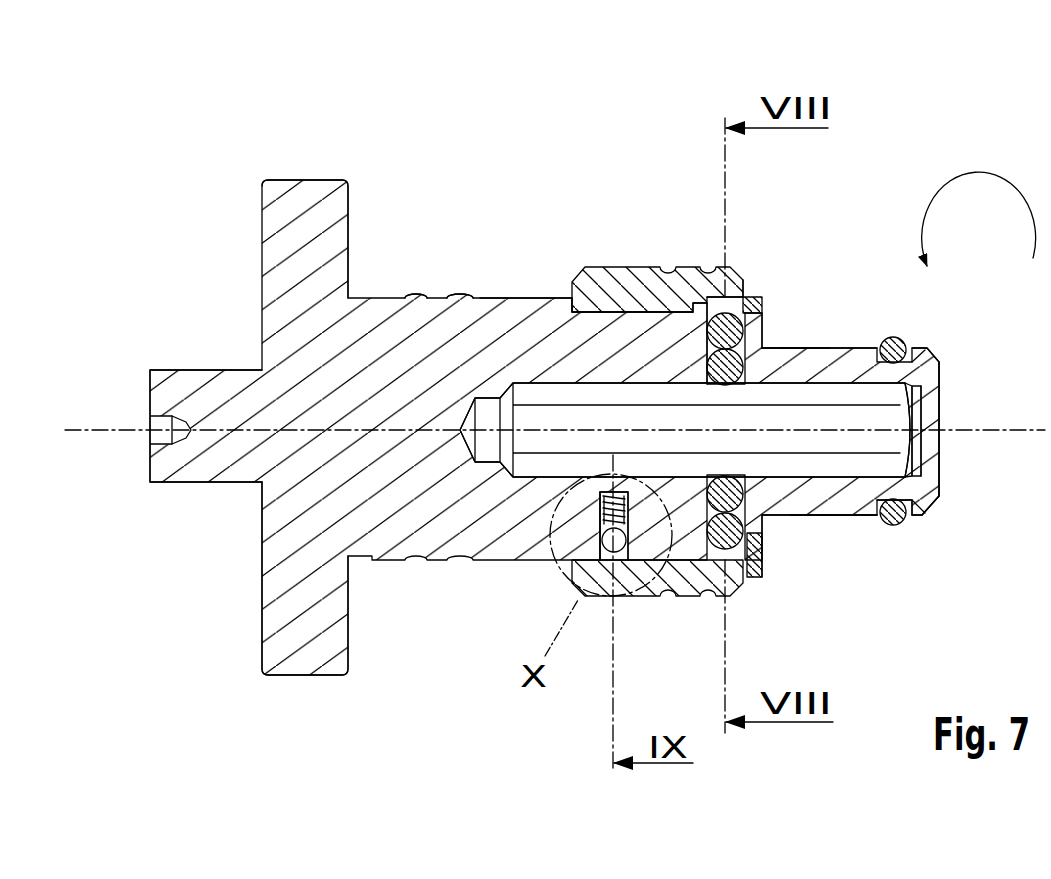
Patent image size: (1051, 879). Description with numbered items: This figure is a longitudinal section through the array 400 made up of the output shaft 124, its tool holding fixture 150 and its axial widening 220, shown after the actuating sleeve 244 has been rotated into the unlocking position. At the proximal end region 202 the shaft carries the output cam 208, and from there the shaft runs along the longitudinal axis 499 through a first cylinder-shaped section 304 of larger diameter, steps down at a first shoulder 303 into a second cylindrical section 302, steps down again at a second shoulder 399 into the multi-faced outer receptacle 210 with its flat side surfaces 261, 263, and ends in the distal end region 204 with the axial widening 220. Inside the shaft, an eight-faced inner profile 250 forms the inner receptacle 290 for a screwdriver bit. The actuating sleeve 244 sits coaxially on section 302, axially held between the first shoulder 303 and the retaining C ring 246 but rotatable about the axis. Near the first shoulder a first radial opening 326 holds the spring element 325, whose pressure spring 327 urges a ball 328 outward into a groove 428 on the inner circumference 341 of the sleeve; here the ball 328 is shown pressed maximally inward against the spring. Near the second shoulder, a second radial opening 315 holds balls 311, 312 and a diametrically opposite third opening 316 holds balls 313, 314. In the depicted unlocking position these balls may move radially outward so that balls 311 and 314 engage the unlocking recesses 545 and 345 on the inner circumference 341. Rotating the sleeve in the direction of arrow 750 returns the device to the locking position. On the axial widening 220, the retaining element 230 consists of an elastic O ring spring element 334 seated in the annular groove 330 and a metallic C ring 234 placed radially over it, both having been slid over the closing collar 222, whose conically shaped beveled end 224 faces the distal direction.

The array 400 is at (145, 219).
The output shaft 124 is at (378, 313).
The output cam 208 is at (300, 212).
The proximal end region 202 is at (147, 366).
The longitudinal axis 499 is at (84, 429).
The first cylinder-shaped section 304 is at (424, 292).
The first shoulder 303 is at (547, 312).
The actuating sleeve 244 is at (607, 301).
The second cylindrical section 302 is at (588, 278).
The inner circumference 341 is at (634, 312).
The second radial opening 315 is at (692, 365).
The ball 311 is at (700, 265).
The unlocking recess 545 is at (741, 297).
The ball 312 is at (740, 384).
The ball 313 is at (692, 518).
The ball 314 is at (712, 572).
The third radial opening 316 is at (648, 594).
The groove 428 is at (627, 600).
The unlocking recess 345 is at (753, 578).
The spring element 325 is at (589, 488).
The first radial opening 326 is at (586, 510).
The pressure spring 327 is at (613, 490).
The ball 328 is at (622, 563).
The eight-faced inner profile 250 is at (597, 478).
The retaining element 246 is at (769, 317).
The second shoulder 399 is at (786, 334).
The side surface 263 is at (795, 348).
The tool holding fixture 150 is at (876, 271).
The distal end region 204 is at (767, 523).
The side surface 261 is at (810, 518).
The outer receptacle 210 is at (843, 554).
The retaining element 230 is at (903, 322).
The C ring 234 is at (902, 340).
The spring element 334 is at (925, 368).
The annular groove 330 is at (932, 390).
The inner receptacle 290 is at (943, 458).
The conically shaped beveled end 224 is at (932, 515).
The axial widening 220 is at (927, 529).
The closing collar 222 is at (918, 522).
The arrow 750 is at (965, 170).